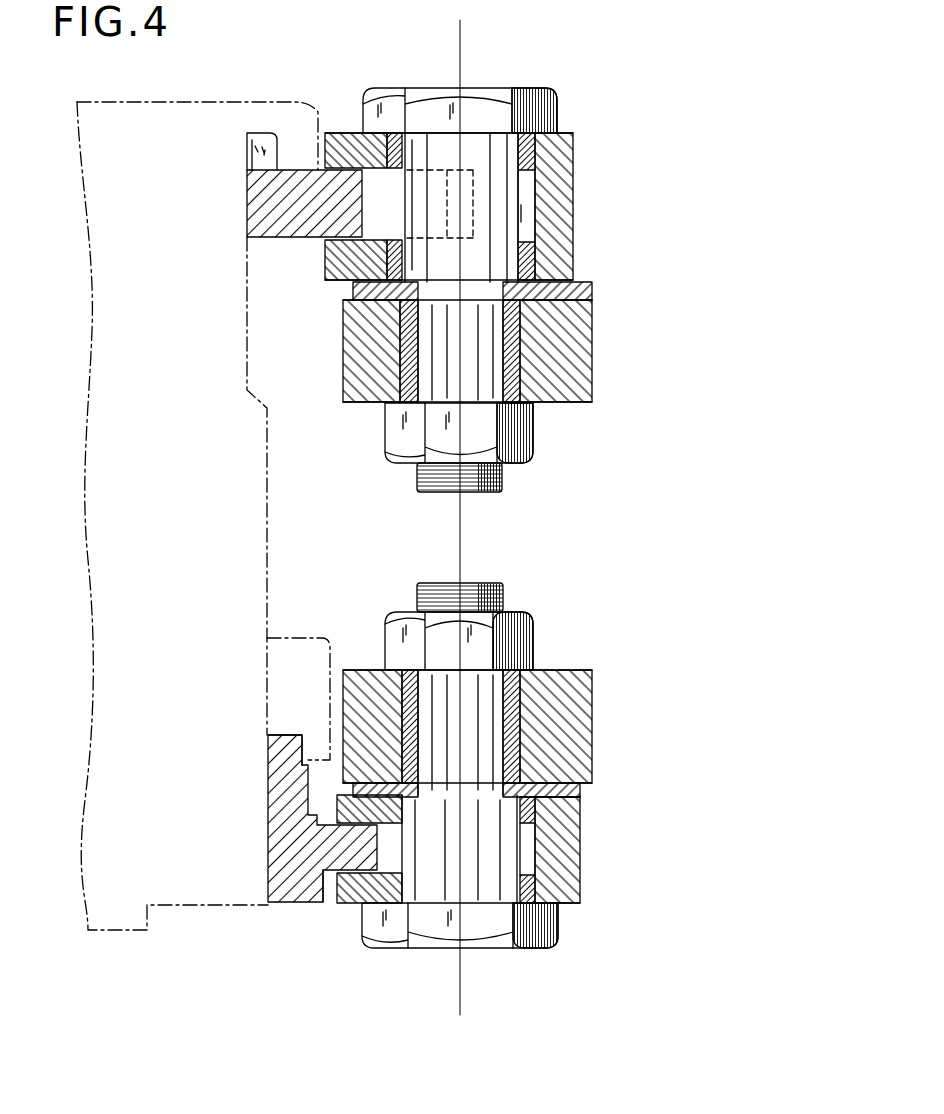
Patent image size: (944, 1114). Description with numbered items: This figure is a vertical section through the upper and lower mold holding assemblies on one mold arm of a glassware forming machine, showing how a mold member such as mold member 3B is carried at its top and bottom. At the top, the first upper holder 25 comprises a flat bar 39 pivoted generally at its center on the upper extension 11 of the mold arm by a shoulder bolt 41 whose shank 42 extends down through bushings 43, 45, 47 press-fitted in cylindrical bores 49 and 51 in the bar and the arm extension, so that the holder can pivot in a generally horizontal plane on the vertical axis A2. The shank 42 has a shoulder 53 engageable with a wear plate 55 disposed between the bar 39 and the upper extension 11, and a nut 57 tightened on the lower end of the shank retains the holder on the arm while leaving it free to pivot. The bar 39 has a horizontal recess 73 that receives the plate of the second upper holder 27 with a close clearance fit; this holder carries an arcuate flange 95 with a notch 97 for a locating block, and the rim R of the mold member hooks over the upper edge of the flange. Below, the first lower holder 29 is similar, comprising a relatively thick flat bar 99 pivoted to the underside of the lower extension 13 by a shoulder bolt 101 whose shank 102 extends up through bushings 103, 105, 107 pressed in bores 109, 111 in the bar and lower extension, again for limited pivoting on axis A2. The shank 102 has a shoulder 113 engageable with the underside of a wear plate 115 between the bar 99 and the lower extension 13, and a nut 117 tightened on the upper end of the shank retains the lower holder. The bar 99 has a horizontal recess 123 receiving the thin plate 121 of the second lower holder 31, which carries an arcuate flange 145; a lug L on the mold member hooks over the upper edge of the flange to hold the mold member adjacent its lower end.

The rim R is at (318, 108).
The vertical axis A2 is at (462, 48).
The lug L is at (330, 638).
The mold member 3B is at (268, 558).
The arcuate flange 95 is at (265, 133).
The notch 97 is at (250, 152).
The second upper holder 27 is at (278, 241).
The bushing 43 is at (392, 132).
The shoulder bolt 41 is at (552, 100).
The cylindrical bore 49 is at (537, 152).
The shoulder 53 is at (358, 287).
The flat bar 39 is at (576, 198).
The bushing 45 is at (528, 272).
The horizontal recess 73 is at (530, 211).
The first upper holder 25 is at (578, 170).
The wear plate 55 is at (594, 290).
The upper extension 11 is at (593, 383).
The cylindrical bore 51 is at (410, 383).
The bushing 47 is at (512, 368).
The nut 57 is at (537, 450).
The shank 42 is at (482, 492).
The shank 102 is at (475, 582).
The nut 117 is at (533, 630).
The lower extension 13 is at (594, 712).
The bore 111 is at (402, 723).
The bushing 107 is at (514, 732).
The shoulder bolt 101 is at (496, 948).
The shoulder 113 is at (556, 790).
The wear plate 115 is at (353, 788).
The bore 109 is at (357, 903).
The second lower holder 31 is at (281, 910).
The arcuate flange 145 is at (278, 753).
The plate 121 is at (325, 880).
The flat bar 99 is at (581, 875).
The first lower holder 29 is at (584, 838).
The bushing 105 is at (535, 815).
The bushing 103 is at (552, 895).
The horizontal recess 123 is at (530, 853).